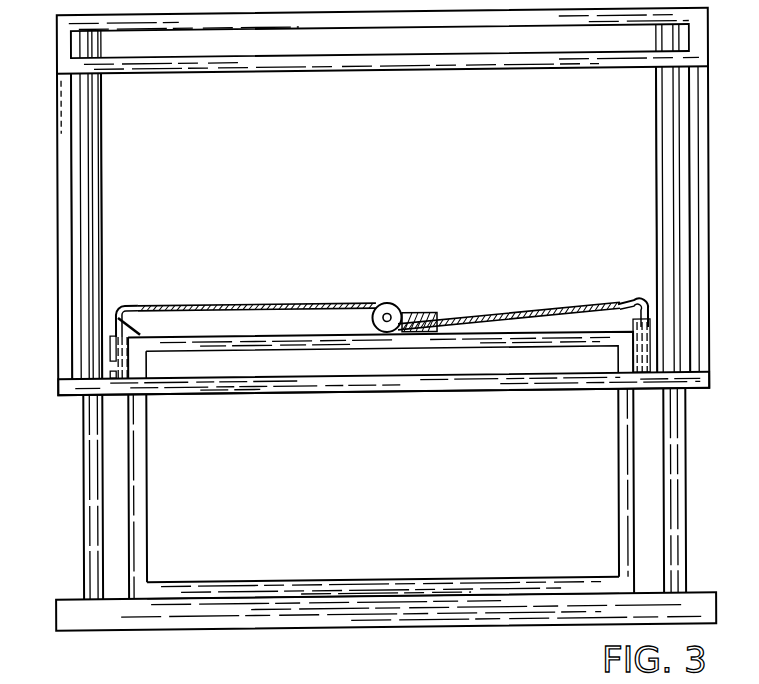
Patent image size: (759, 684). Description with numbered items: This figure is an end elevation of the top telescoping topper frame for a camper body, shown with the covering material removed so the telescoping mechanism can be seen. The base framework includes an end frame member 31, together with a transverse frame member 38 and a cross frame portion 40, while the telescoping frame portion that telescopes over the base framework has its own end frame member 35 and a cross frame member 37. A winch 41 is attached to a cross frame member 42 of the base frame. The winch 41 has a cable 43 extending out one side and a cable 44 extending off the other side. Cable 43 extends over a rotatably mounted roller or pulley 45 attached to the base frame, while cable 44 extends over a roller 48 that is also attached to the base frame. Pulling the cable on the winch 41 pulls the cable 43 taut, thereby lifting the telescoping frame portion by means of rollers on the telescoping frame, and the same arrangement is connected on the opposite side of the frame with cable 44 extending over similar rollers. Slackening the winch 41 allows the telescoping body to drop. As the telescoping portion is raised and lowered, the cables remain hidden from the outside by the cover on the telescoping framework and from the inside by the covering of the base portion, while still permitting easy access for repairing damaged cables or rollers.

The end frame member 31 is at (93, 511).
The end frame member 35 is at (66, 196).
The cross frame member 37 is at (328, 62).
The transverse frame member 38 is at (320, 587).
The cross frame portion 40 is at (490, 613).
The winch 41 is at (432, 279).
The cross frame member 42 is at (350, 343).
The cable 43 is at (557, 283).
The cable 44 is at (280, 304).
The roller or pulley 45 is at (643, 300).
The roller 48 is at (140, 285).